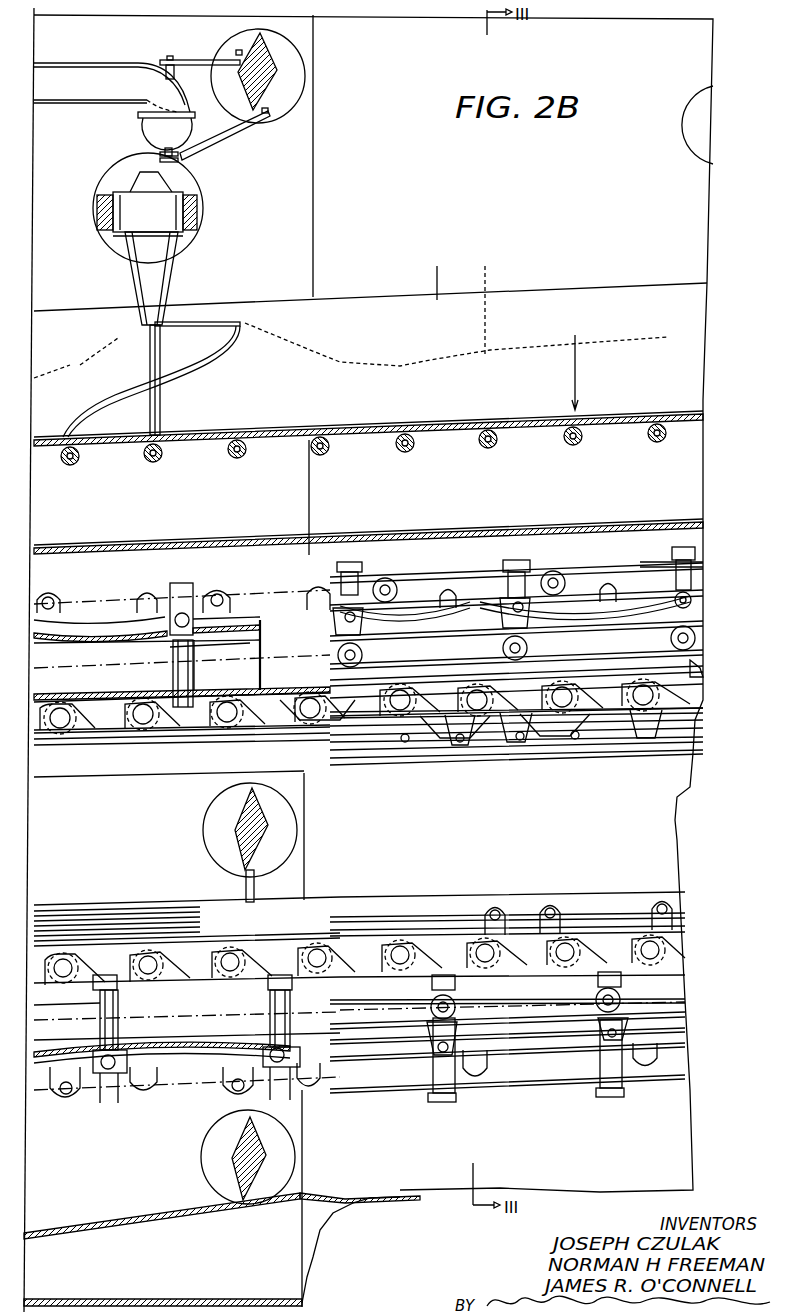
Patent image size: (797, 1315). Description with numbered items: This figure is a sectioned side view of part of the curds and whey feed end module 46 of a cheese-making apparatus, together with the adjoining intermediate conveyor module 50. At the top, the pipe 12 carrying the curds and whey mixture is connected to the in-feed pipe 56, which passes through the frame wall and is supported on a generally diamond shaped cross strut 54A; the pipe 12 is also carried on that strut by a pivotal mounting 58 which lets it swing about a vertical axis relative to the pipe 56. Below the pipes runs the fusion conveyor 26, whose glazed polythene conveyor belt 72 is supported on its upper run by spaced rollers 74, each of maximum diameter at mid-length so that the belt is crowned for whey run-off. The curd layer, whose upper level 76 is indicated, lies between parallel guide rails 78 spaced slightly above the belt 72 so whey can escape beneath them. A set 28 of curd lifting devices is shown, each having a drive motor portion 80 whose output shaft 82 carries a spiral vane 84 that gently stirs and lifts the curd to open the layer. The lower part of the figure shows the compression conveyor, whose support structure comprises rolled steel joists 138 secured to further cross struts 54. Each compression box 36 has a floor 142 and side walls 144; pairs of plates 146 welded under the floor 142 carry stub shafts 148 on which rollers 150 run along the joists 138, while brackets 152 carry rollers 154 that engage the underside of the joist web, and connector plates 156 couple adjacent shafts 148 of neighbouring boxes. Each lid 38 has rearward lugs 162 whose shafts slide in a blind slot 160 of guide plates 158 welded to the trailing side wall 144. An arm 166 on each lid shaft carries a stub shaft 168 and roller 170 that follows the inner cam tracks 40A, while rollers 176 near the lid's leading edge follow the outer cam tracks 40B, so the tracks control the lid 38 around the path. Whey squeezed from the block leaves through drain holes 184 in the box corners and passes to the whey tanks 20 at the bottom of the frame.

The pipe 12 is at (70, 80).
The whey tanks 20 is at (145, 1215).
The conveyor 26 is at (575, 359).
The set of curd lifting devices 28 is at (130, 182).
The compression box 36 is at (73, 677).
The lid 38 is at (253, 620).
The inner set of cam tracks 40A is at (703, 652).
The outer set of cam tracks 40B is at (703, 592).
The curds and whey feed end module 46 is at (294, 211).
The intermediate conveyor module 50 is at (357, 211).
The cross struts 54 is at (245, 832).
The strut 54A is at (262, 72).
The in-feed pipe 56 is at (165, 133).
The pivotal mounting 58 is at (161, 60).
The conveyor belt 72 is at (388, 537).
The spaced rollers 74 is at (565, 448).
The upper level of curd layer 76 is at (484, 292).
The guide rails 78 is at (437, 264).
The drive motor portion 80 is at (152, 293).
The output shaft 82 is at (162, 352).
The spiral vane 84 is at (204, 365).
The rolled steel joists 138 is at (138, 765).
The floor 142 is at (242, 690).
The side walls 144 is at (100, 1008).
The plates 146 is at (600, 695).
The stub shafts 148 is at (560, 712).
The roller 150 is at (63, 732).
The brackets 152 is at (517, 700).
The roller 154 is at (412, 762).
The connector plates 156 is at (517, 705).
The guide plates 158 is at (700, 546).
The blind slot 160 is at (180, 592).
The lugs 162 is at (386, 578).
The arm 166 is at (455, 585).
The stub shaft 168 is at (502, 650).
The roller 170 is at (338, 658).
The rollers 176 is at (397, 578).
The drain holes 184 is at (355, 705).